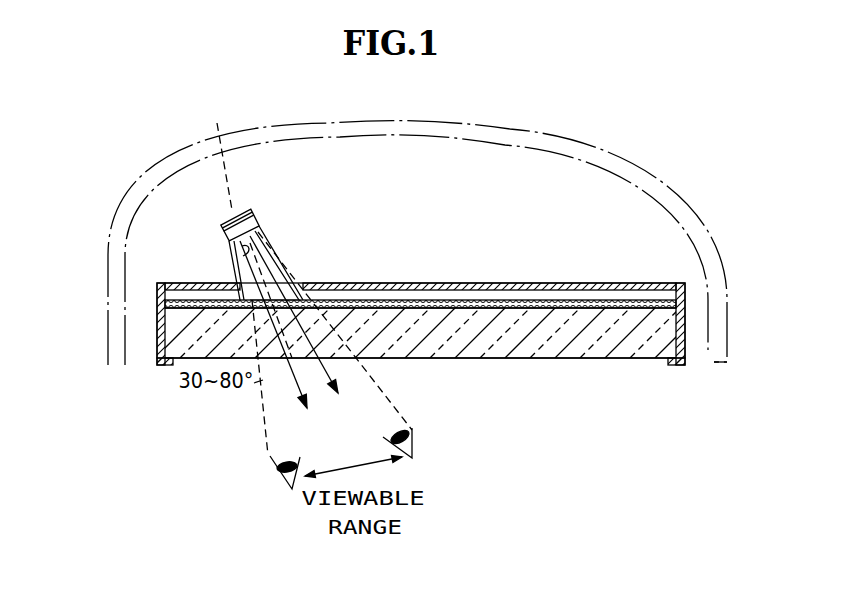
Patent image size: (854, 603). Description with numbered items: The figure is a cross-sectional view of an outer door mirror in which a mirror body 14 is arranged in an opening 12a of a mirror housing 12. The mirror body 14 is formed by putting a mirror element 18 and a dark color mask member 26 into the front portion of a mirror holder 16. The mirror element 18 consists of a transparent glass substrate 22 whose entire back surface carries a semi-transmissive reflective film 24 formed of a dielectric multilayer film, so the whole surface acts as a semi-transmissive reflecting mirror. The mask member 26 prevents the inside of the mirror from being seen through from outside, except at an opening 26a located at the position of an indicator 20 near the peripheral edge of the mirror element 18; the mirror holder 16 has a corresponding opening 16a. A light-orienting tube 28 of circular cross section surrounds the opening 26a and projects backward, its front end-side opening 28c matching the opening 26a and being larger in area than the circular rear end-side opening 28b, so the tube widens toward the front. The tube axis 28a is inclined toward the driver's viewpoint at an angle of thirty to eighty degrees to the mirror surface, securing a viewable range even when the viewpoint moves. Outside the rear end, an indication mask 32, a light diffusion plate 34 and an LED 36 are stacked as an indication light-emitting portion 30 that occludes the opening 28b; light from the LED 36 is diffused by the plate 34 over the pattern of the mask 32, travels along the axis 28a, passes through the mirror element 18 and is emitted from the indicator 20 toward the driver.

The mirror housing 12 is at (597, 143).
The opening 12a is at (708, 350).
The mirror body 14 is at (603, 231).
The mirror holder 16 is at (421, 296).
The opening 16a is at (303, 284).
The mirror element 18 is at (566, 363).
The indicator 20 is at (282, 372).
The transparent glass substrate 22 is at (449, 350).
The semi-transmissive reflective film 24 is at (511, 308).
The mask member 26 is at (462, 300).
The opening 26a is at (268, 309).
The light-orienting tube 28 is at (201, 197).
The tube axis 28a is at (220, 152).
The rear end-side opening 28b is at (229, 254).
The front end-side opening 28c is at (236, 276).
The indication light-emitting portion 30 is at (229, 245).
The indication mask 32 is at (262, 236).
The light diffusion plate 34 is at (263, 222).
The LED 36 is at (253, 211).